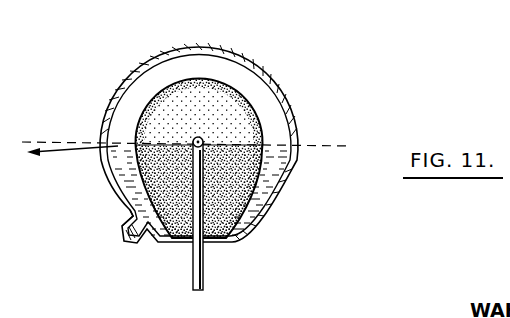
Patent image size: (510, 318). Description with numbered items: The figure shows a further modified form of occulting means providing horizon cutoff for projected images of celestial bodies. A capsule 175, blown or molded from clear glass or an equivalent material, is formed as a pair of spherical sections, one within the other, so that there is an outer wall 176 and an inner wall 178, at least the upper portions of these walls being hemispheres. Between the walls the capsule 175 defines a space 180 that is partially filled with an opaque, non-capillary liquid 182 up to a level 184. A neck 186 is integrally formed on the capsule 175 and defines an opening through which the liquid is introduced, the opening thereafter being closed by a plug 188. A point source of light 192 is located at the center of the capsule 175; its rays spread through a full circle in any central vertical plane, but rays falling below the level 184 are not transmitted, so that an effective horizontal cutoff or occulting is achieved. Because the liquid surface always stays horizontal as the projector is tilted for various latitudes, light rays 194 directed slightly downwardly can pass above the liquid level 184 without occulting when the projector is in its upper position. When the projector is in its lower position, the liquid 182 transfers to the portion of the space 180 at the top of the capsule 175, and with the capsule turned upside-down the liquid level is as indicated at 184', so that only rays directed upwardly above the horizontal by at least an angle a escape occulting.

The capsule 175 is at (287, 71).
The outer wall 176 is at (229, 47).
The inner wall 178 is at (199, 80).
The space 180 is at (216, 71).
The opaque, non-capillary liquid 182 is at (276, 203).
The level 184 is at (207, 190).
The liquid level 184' is at (186, 122).
The neck 186 is at (126, 213).
The plug 188 is at (126, 244).
The point source of light 192 is at (204, 139).
The light rays 194 is at (66, 156).
The angle a is at (45, 137).